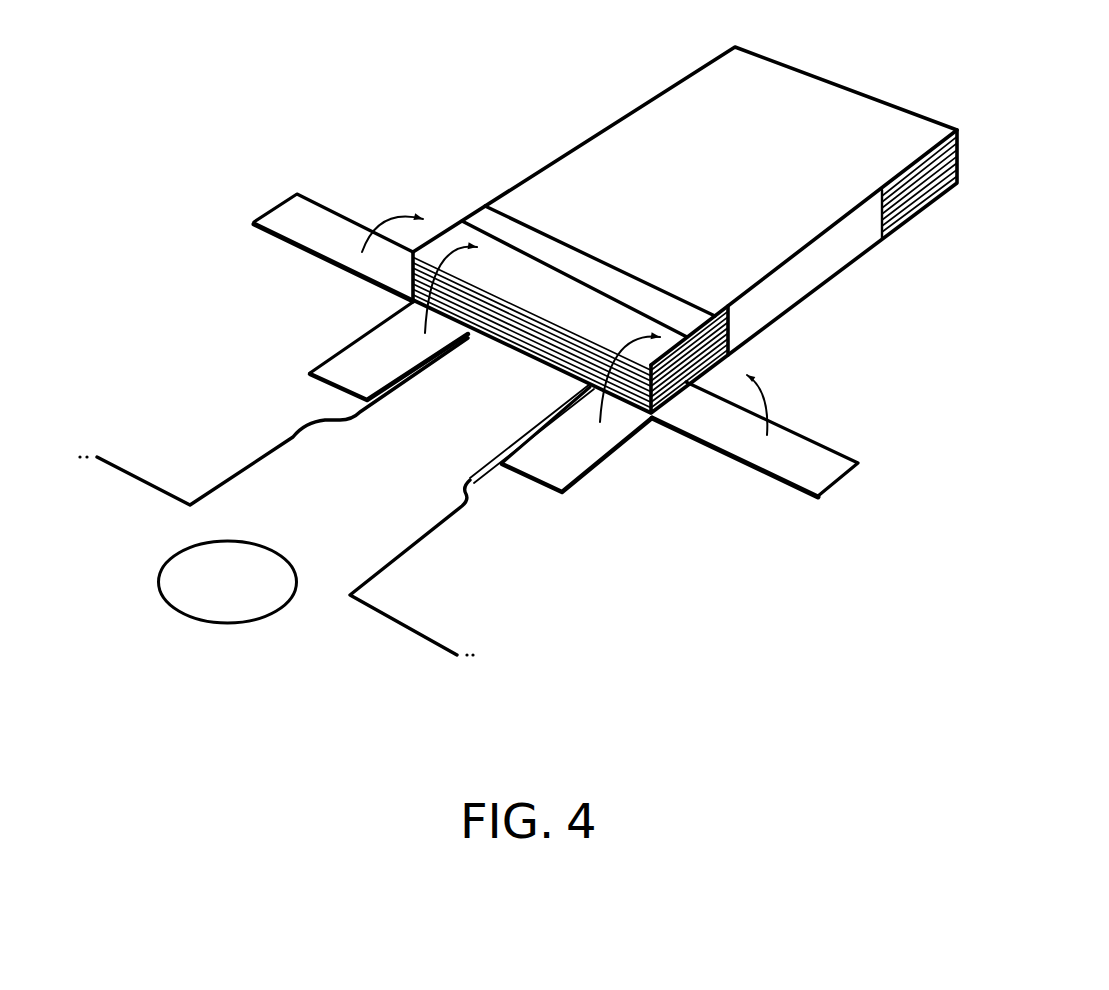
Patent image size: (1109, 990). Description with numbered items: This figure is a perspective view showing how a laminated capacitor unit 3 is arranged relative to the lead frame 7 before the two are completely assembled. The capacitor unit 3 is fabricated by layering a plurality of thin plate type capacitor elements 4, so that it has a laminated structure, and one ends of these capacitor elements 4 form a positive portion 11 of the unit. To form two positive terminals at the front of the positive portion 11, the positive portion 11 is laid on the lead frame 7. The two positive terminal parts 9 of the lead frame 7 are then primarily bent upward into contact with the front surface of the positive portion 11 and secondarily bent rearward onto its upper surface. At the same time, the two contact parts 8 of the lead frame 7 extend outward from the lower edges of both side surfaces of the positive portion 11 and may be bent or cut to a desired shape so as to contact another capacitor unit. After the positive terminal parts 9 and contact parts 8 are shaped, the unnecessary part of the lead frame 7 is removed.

The capacitor unit 3 is at (845, 120).
The capacitor element 4 is at (728, 357).
The lead frame 7 is at (317, 478).
The contact part 8 is at (815, 473).
The positive terminal part 9 is at (575, 458).
The positive portion 11 is at (555, 310).